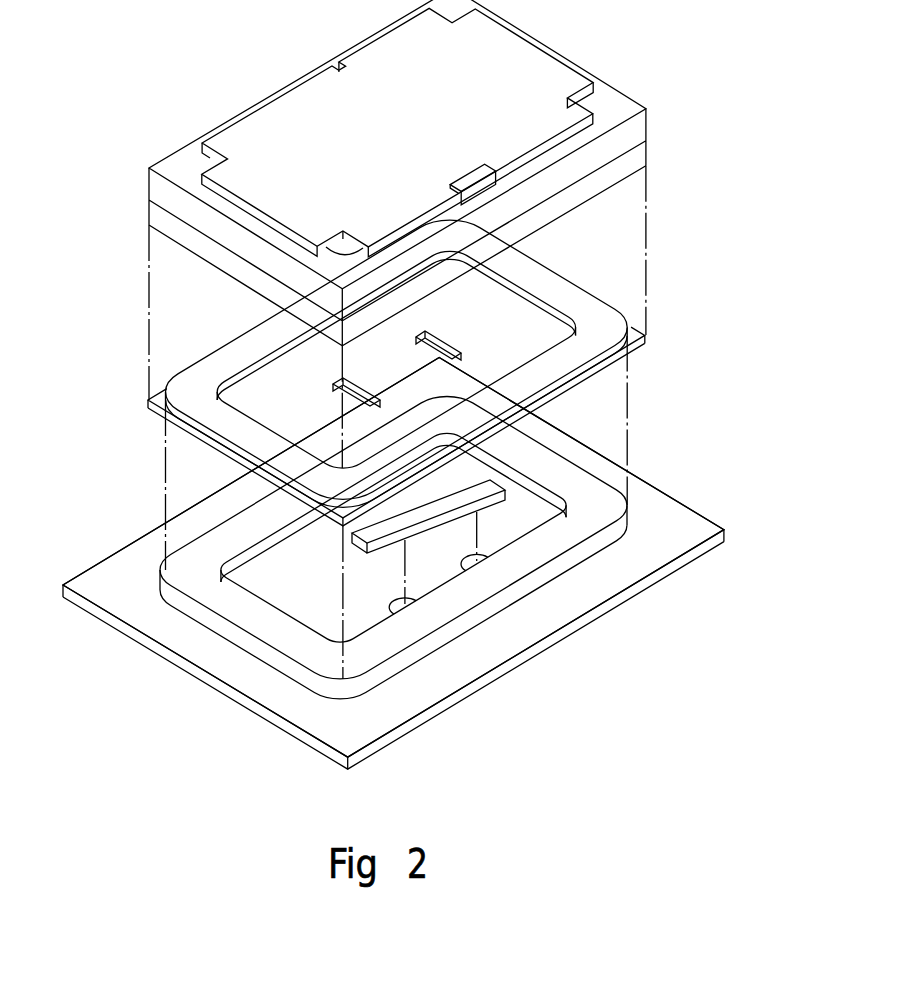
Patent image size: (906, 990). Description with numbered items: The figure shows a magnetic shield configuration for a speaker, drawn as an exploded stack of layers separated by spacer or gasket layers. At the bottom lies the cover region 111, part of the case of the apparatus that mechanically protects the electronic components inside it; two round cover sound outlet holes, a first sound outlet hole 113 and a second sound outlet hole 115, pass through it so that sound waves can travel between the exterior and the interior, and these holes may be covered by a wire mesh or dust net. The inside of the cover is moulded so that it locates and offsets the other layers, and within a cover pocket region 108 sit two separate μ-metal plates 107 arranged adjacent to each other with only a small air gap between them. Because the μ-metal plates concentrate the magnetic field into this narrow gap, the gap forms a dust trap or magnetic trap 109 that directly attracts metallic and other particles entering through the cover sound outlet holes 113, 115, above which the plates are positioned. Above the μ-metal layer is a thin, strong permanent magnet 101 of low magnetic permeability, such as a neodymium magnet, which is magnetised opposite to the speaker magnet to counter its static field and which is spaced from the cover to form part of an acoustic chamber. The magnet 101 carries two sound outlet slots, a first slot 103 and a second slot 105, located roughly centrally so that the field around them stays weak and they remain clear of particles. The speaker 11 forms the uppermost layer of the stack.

The speaker 11 is at (540, 98).
The magnet 101 is at (485, 293).
The first slot 103 is at (358, 395).
The second slot 105 is at (450, 333).
The μ-metal plates 107 is at (599, 590).
The cover pocket region 108 is at (333, 620).
The magnetic trap 109 is at (495, 470).
The cover region 111 is at (393, 702).
The first sound outlet hole 113 is at (410, 606).
The second sound outlet hole 115 is at (480, 564).